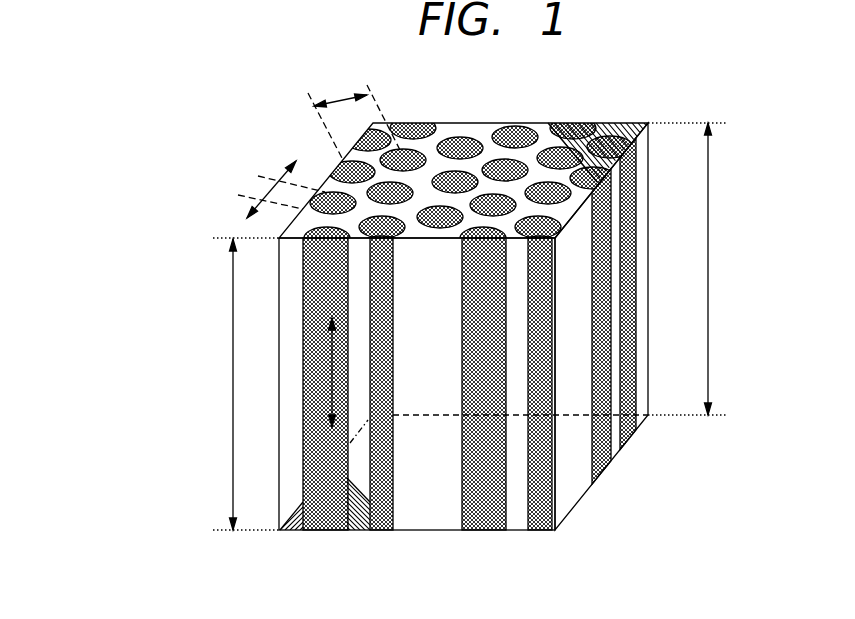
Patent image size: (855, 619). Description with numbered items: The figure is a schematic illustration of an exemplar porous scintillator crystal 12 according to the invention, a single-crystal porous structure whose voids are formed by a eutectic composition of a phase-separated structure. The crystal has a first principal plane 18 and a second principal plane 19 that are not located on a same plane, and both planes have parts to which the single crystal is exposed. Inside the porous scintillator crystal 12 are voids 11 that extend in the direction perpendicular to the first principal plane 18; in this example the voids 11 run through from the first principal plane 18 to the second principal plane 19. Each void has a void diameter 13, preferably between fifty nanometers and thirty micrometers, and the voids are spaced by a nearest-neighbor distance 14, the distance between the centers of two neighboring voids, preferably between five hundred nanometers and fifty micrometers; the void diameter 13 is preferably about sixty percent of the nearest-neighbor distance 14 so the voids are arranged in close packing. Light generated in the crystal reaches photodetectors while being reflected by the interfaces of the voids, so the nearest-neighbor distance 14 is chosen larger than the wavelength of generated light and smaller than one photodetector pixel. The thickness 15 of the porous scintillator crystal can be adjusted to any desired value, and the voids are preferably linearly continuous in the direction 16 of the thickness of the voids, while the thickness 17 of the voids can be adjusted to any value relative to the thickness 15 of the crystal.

The void 11 is at (463, 140).
The porous scintillator crystal 12 is at (527, 158).
The void diameter 13 is at (262, 188).
The nearest-neighbor distance of the voids 14 is at (345, 95).
The thickness of the porous scintillator crystal 15 is at (712, 277).
The direction of the thickness of the voids 16 is at (332, 365).
The thickness of the voids 17 is at (232, 363).
The first principal plane 18 is at (605, 132).
The second principal plane 19 is at (357, 528).